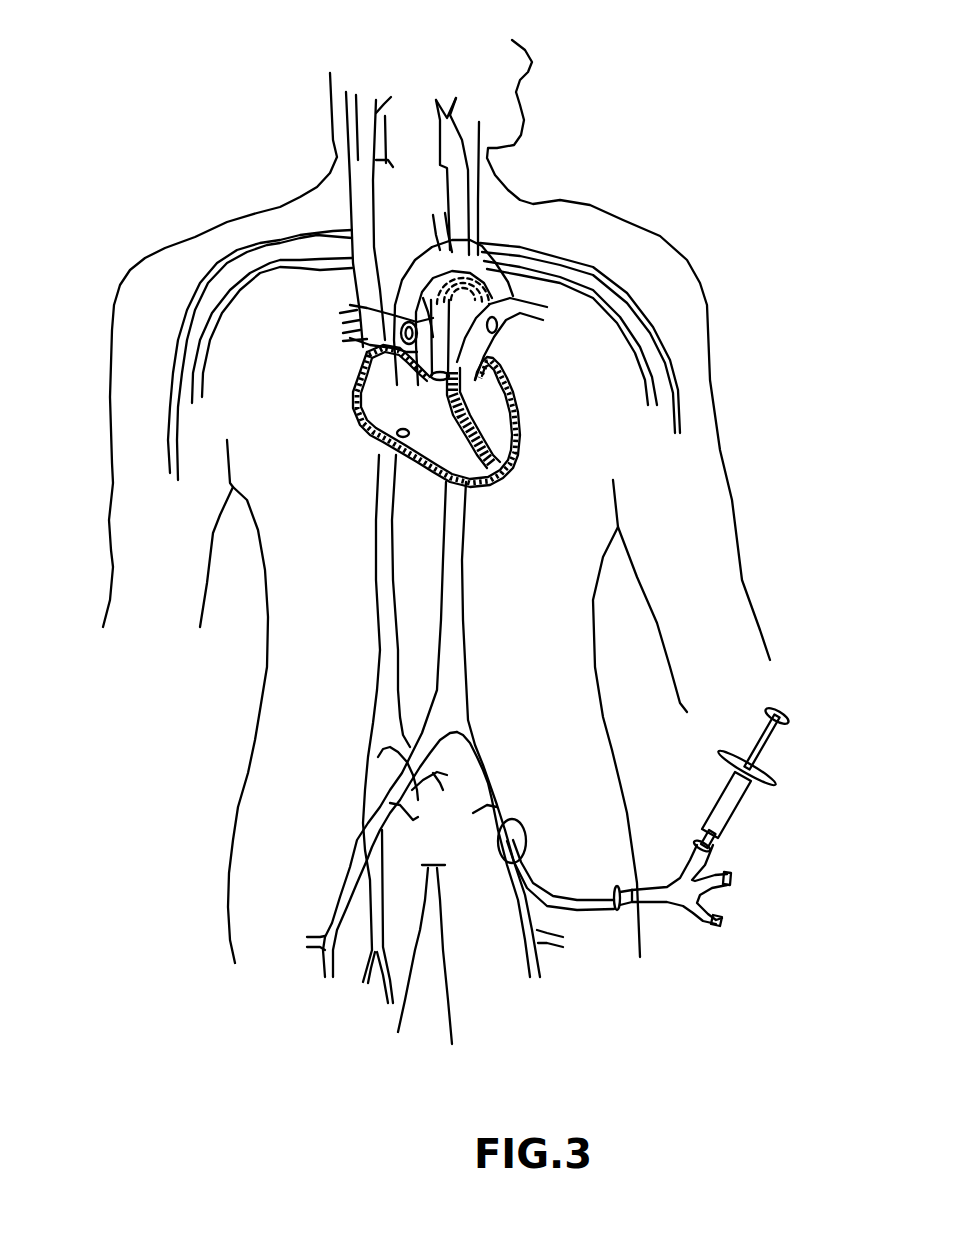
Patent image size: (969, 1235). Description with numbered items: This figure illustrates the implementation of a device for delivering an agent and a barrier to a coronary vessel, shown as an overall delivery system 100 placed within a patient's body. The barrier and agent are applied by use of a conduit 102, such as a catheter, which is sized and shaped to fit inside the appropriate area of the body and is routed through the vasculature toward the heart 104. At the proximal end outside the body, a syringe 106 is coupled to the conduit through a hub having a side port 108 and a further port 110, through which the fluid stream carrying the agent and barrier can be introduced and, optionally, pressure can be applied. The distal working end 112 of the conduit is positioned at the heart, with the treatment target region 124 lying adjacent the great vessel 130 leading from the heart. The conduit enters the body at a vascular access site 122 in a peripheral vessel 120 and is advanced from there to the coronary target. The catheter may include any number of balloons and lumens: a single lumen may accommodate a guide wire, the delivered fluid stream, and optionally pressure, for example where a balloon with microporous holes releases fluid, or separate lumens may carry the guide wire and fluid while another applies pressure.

The system for delivering device to heart 100 is at (671, 72).
The delivery catheter / lead 102 is at (259, 219).
The heart 104 is at (282, 389).
The syringe 106 is at (811, 779).
The side port of introducer hub 108 is at (829, 853).
The hemostasis valve port 110 is at (815, 935).
The implantable device at catheter tip 112 is at (237, 274).
The femoral / iliac vessel 120 is at (671, 729).
The introducer sheath at access site 122 is at (687, 793).
The target site in vasculature 124 is at (617, 237).
The aortic arch / great vessel 130 is at (304, 223).